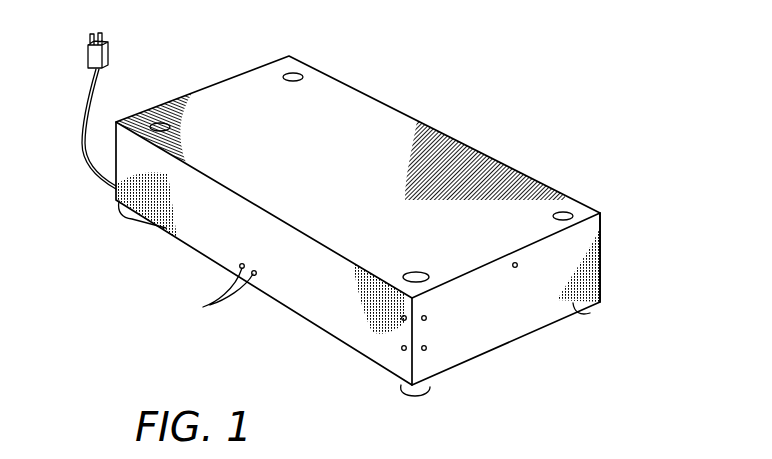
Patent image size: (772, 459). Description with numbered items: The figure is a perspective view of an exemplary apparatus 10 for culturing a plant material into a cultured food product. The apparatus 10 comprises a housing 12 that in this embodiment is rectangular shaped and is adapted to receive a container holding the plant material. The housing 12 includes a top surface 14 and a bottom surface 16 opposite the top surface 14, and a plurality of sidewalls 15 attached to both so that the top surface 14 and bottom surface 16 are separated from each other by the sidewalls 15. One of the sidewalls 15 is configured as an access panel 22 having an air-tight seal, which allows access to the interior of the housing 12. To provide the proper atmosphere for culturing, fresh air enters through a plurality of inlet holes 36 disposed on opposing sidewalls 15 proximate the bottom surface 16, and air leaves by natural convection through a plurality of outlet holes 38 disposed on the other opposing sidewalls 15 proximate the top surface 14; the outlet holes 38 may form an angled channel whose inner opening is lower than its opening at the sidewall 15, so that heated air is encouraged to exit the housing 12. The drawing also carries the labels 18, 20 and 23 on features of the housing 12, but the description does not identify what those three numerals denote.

The apparatus 10 is at (646, 151).
The housing 12 is at (461, 142).
The top surface 14 is at (360, 112).
The sidewalls 15 is at (177, 217).
The bottom surface 16 is at (324, 332).
The aperture 18 is at (564, 210).
The foot 20 is at (402, 388).
The access panel 22 is at (570, 258).
The corner edge 23 is at (603, 228).
The inlet holes 36 is at (203, 307).
The outlet holes 38 is at (517, 268).